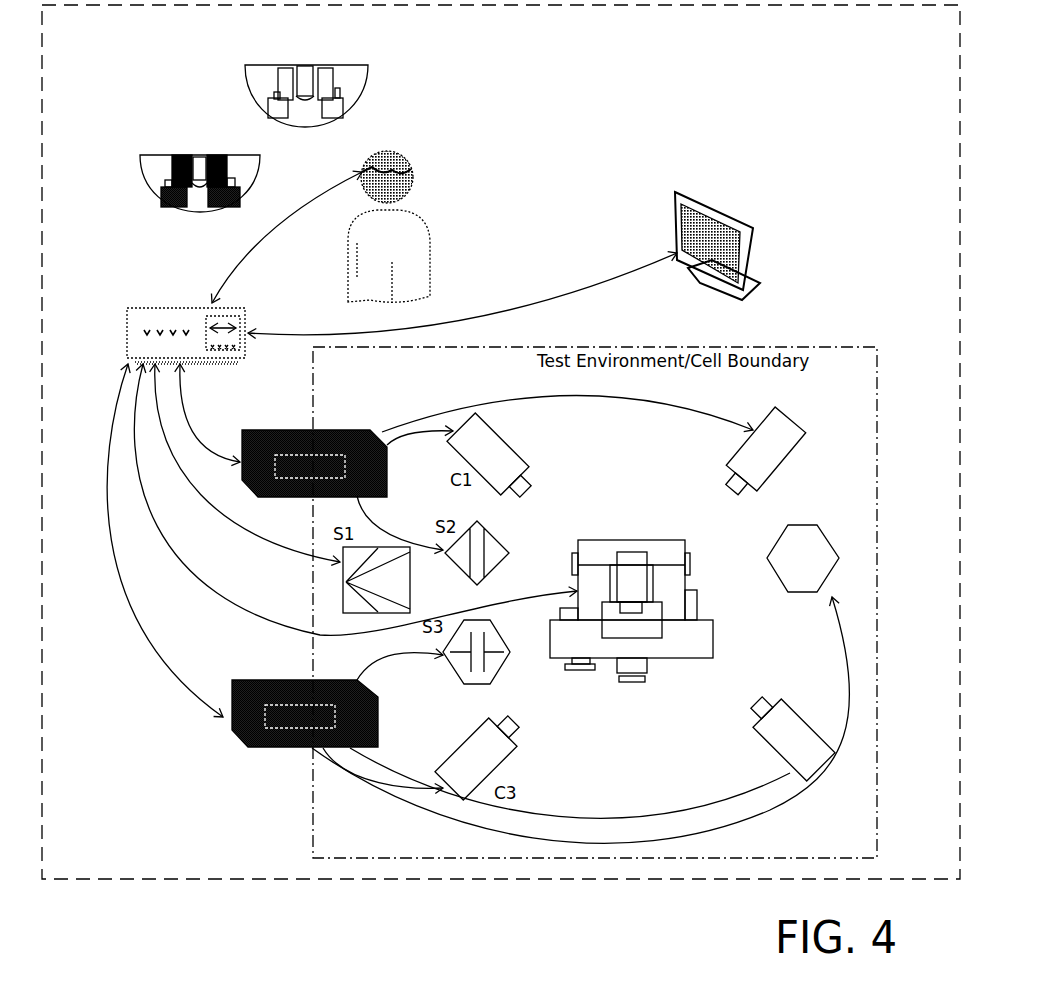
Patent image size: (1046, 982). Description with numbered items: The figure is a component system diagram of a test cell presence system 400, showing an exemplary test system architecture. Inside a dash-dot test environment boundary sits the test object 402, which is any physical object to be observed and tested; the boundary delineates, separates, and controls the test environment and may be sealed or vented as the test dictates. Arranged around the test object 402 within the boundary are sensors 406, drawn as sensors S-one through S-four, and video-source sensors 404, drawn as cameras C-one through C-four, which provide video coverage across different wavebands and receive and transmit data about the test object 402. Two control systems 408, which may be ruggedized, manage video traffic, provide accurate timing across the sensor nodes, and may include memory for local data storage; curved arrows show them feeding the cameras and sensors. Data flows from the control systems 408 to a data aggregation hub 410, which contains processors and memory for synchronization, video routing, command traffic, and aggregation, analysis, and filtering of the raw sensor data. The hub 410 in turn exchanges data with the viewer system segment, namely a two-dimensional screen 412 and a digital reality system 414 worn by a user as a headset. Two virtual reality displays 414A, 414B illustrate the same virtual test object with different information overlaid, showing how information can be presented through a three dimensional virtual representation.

The test cell presence system 400 is at (96, 45).
The test object 402 is at (670, 575).
The video-source sensor 404 is at (810, 432).
The sensor 406 is at (803, 554).
The control system 408 is at (283, 432).
The data aggregation hub 410 is at (150, 323).
The 2-D screen 412 is at (680, 218).
The digital reality system 414 is at (405, 173).
The virtual reality display 414A is at (262, 80).
The virtual reality display 414B is at (158, 170).